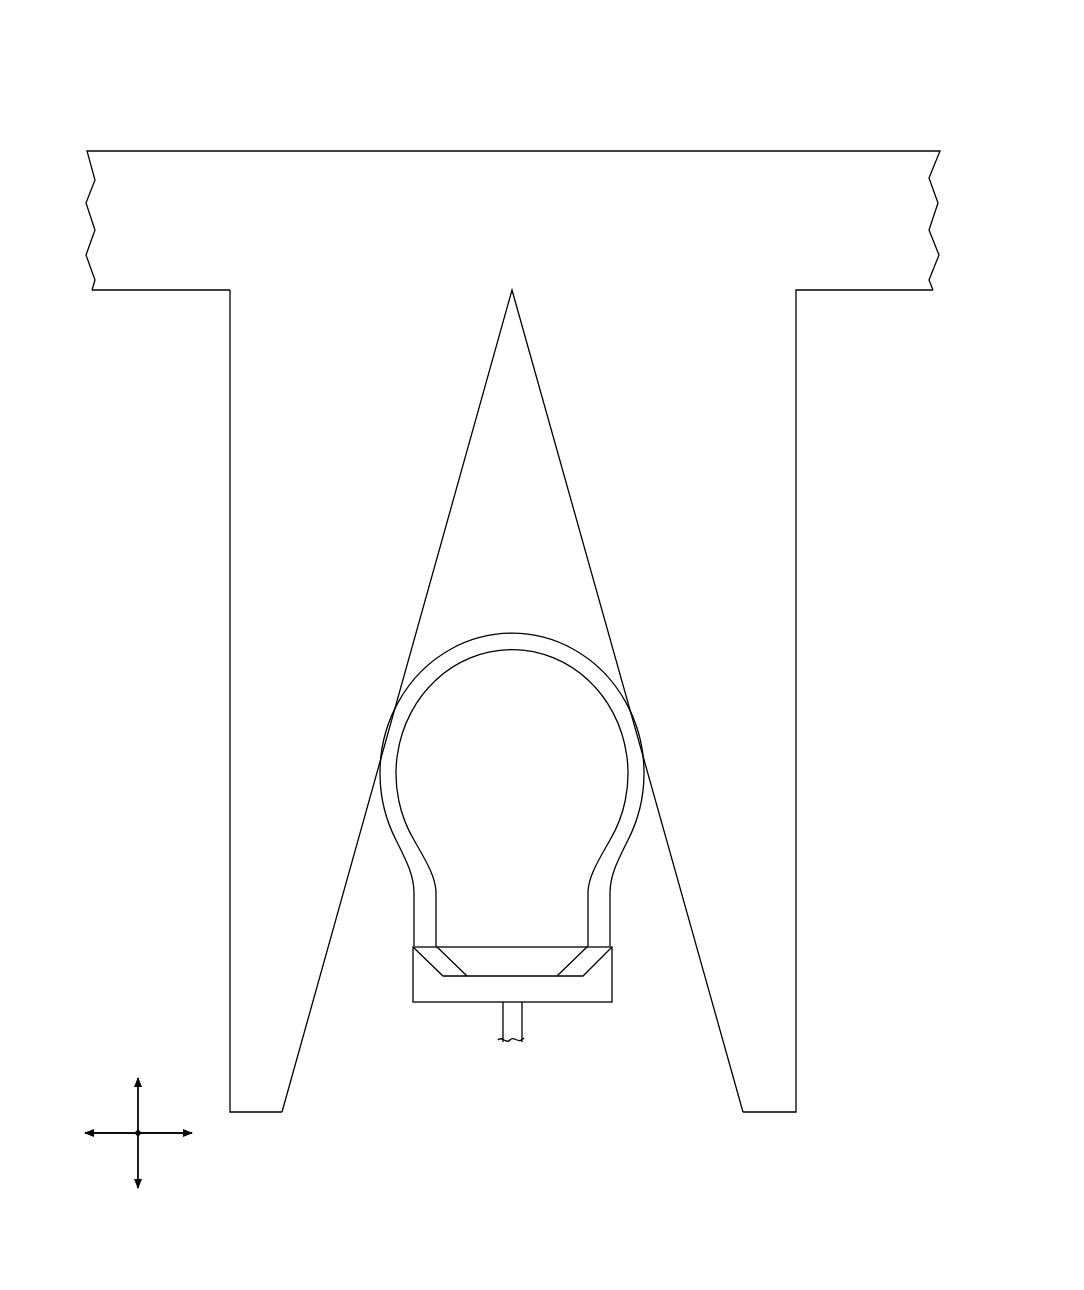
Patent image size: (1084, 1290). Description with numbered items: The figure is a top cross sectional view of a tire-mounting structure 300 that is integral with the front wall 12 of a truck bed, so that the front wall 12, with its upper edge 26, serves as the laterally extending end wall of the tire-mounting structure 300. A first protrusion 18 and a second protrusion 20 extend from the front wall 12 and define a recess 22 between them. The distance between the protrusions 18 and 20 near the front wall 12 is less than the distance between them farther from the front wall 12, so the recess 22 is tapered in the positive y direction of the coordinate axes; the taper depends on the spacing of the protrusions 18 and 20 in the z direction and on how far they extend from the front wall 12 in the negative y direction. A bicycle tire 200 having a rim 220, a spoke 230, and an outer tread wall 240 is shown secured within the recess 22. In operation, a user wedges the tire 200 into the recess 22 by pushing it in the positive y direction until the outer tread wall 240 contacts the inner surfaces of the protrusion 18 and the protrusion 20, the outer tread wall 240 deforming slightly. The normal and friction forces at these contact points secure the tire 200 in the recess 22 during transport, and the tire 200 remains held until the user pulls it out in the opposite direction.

The tire-mounting structure 300 is at (499, 624).
The front wall 12 is at (180, 290).
The upper edge 26 is at (116, 278).
The first protrusion 18 is at (240, 542).
The recess 22 is at (512, 701).
The second protrusion 20 is at (784, 542).
The outer tread wall 240 is at (512, 632).
The bicycle tire 200 is at (490, 813).
The rim 220 is at (575, 992).
The spoke 230 is at (508, 1035).